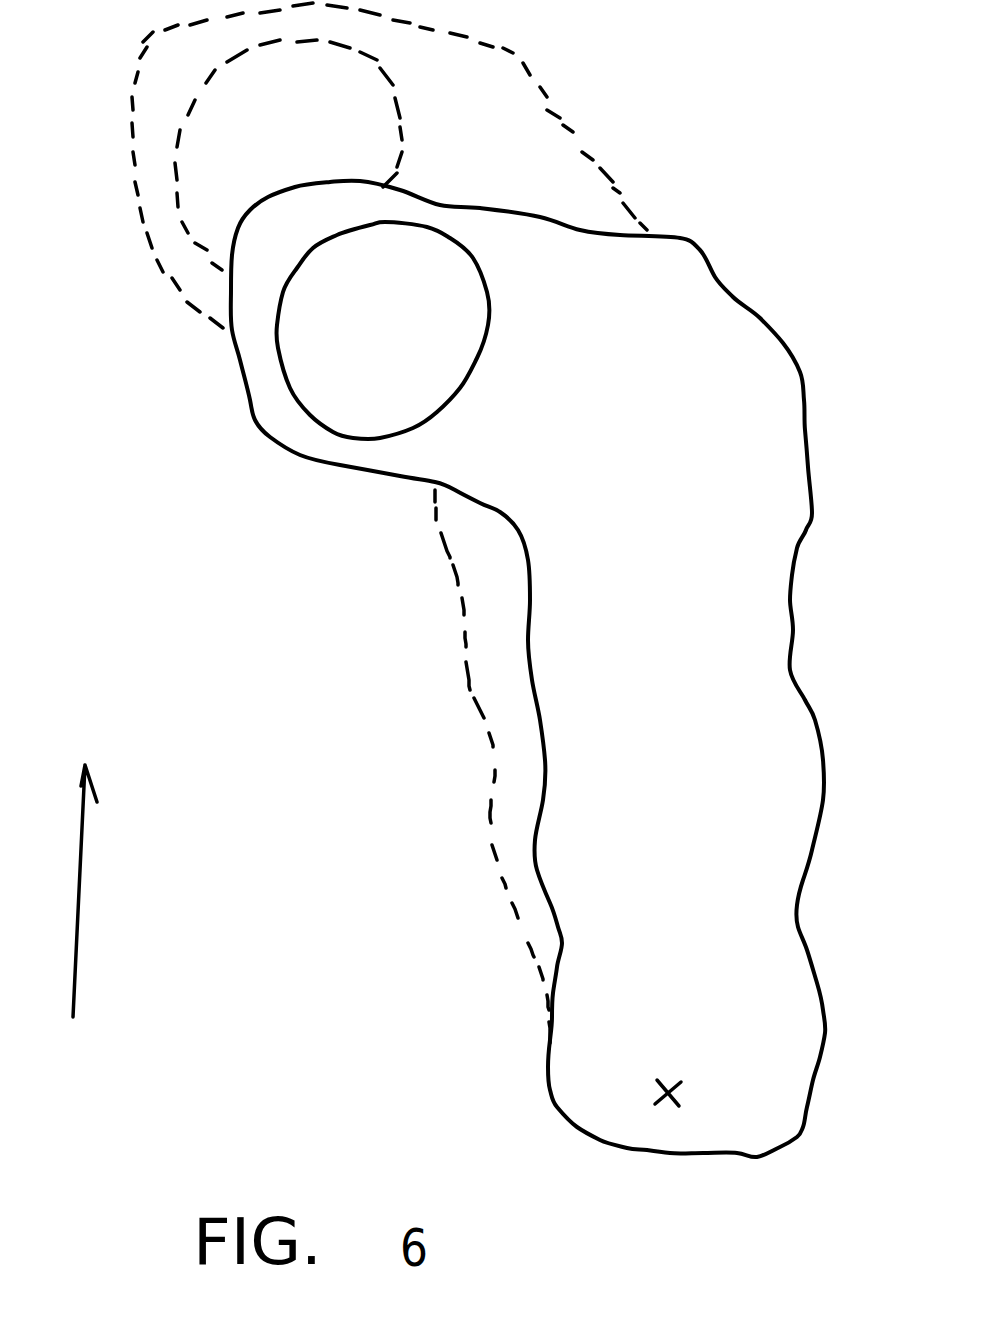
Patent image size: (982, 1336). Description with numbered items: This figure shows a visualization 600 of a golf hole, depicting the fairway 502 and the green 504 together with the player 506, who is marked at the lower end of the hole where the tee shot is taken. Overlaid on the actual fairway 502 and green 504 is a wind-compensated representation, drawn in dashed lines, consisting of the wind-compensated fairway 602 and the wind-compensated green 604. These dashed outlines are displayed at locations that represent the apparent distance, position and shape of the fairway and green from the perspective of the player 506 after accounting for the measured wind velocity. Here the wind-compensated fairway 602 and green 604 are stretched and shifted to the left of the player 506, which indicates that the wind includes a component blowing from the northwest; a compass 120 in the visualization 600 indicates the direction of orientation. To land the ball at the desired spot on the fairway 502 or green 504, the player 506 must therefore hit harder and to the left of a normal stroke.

The fairway 502 is at (700, 493).
The green 504 is at (425, 350).
The player 506 is at (690, 1086).
The visualization 600 is at (250, 537).
The wind-compensated fairway 602 is at (463, 628).
The wind-compensated green 604 is at (337, 140).
The compass 120 is at (105, 888).